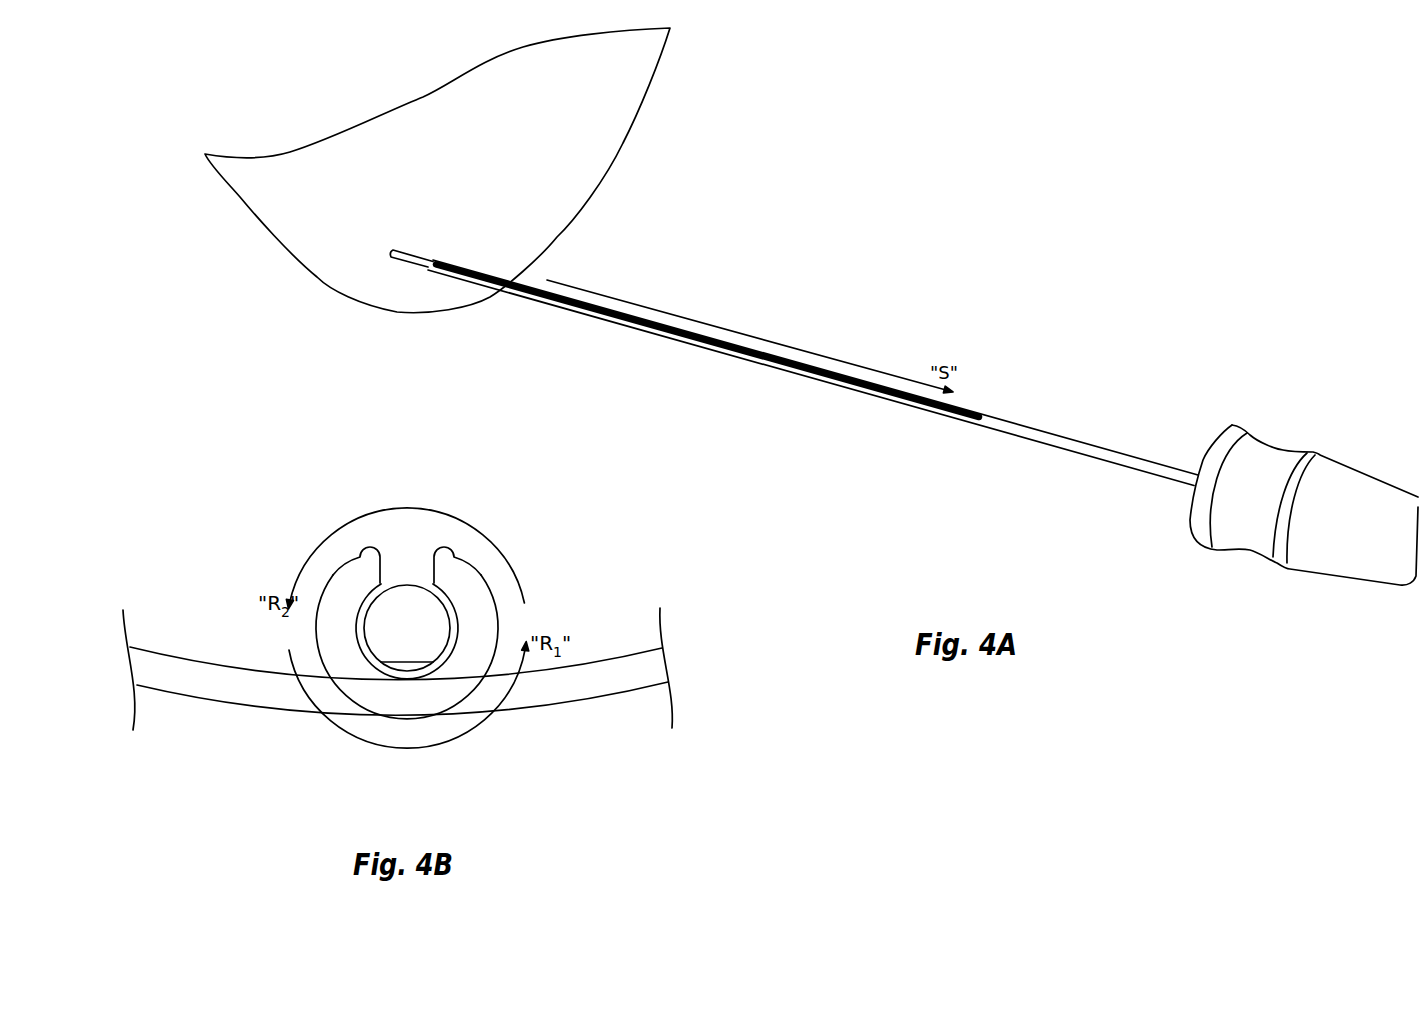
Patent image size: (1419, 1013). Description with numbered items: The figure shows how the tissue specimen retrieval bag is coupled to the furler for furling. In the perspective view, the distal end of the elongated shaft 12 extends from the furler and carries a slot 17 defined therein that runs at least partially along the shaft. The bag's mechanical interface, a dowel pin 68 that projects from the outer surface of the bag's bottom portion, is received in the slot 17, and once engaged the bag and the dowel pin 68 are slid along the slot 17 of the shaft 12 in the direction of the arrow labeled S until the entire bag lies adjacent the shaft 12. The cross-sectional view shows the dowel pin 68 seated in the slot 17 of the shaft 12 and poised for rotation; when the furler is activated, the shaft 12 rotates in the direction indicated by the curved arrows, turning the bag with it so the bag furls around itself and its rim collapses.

In FIG. 4A, the elongated shaft 12 is at (1087, 448).
In FIG. 4A, the slot 17 is at (969, 405).
In FIG. 4B, the slot 17 is at (405, 550).
In FIG. 4B, the dowel pin 68 is at (438, 616).